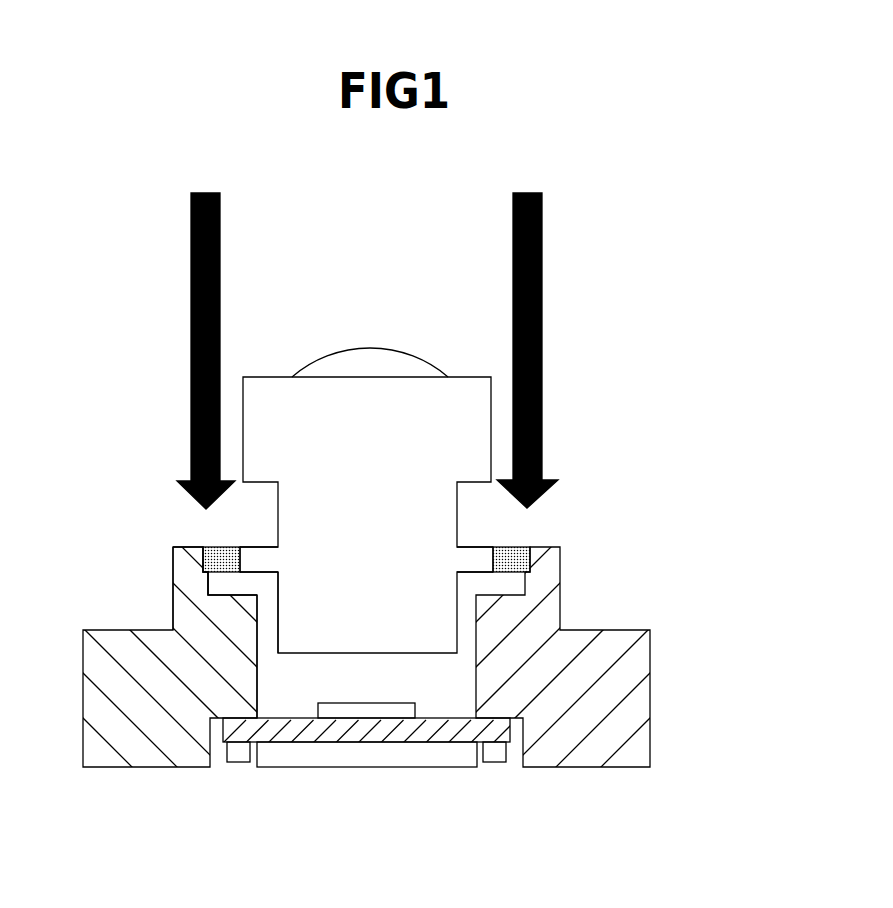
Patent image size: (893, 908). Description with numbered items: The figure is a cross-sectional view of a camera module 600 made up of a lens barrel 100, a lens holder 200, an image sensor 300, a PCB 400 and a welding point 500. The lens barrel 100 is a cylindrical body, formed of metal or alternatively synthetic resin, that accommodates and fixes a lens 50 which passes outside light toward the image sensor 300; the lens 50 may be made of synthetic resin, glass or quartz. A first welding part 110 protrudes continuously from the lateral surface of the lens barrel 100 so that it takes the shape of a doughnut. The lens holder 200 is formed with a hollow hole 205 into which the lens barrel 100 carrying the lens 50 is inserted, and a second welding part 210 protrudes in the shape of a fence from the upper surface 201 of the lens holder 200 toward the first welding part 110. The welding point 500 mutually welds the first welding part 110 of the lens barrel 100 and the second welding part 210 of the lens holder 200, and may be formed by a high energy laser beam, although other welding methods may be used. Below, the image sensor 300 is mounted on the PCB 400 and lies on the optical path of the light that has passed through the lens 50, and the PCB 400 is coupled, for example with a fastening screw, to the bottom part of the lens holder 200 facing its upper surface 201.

The lens 50 is at (404, 360).
The lens barrel 100 is at (325, 417).
The first welding part 110 is at (487, 558).
The lens holder 200 is at (592, 613).
The upper surface 201 is at (238, 592).
The hollow hole 205 is at (282, 676).
The second welding part 210 is at (180, 562).
The image sensor 300 is at (345, 708).
The PCB 400 is at (433, 738).
The welding point 500 is at (530, 553).
The camera module 600 is at (620, 310).